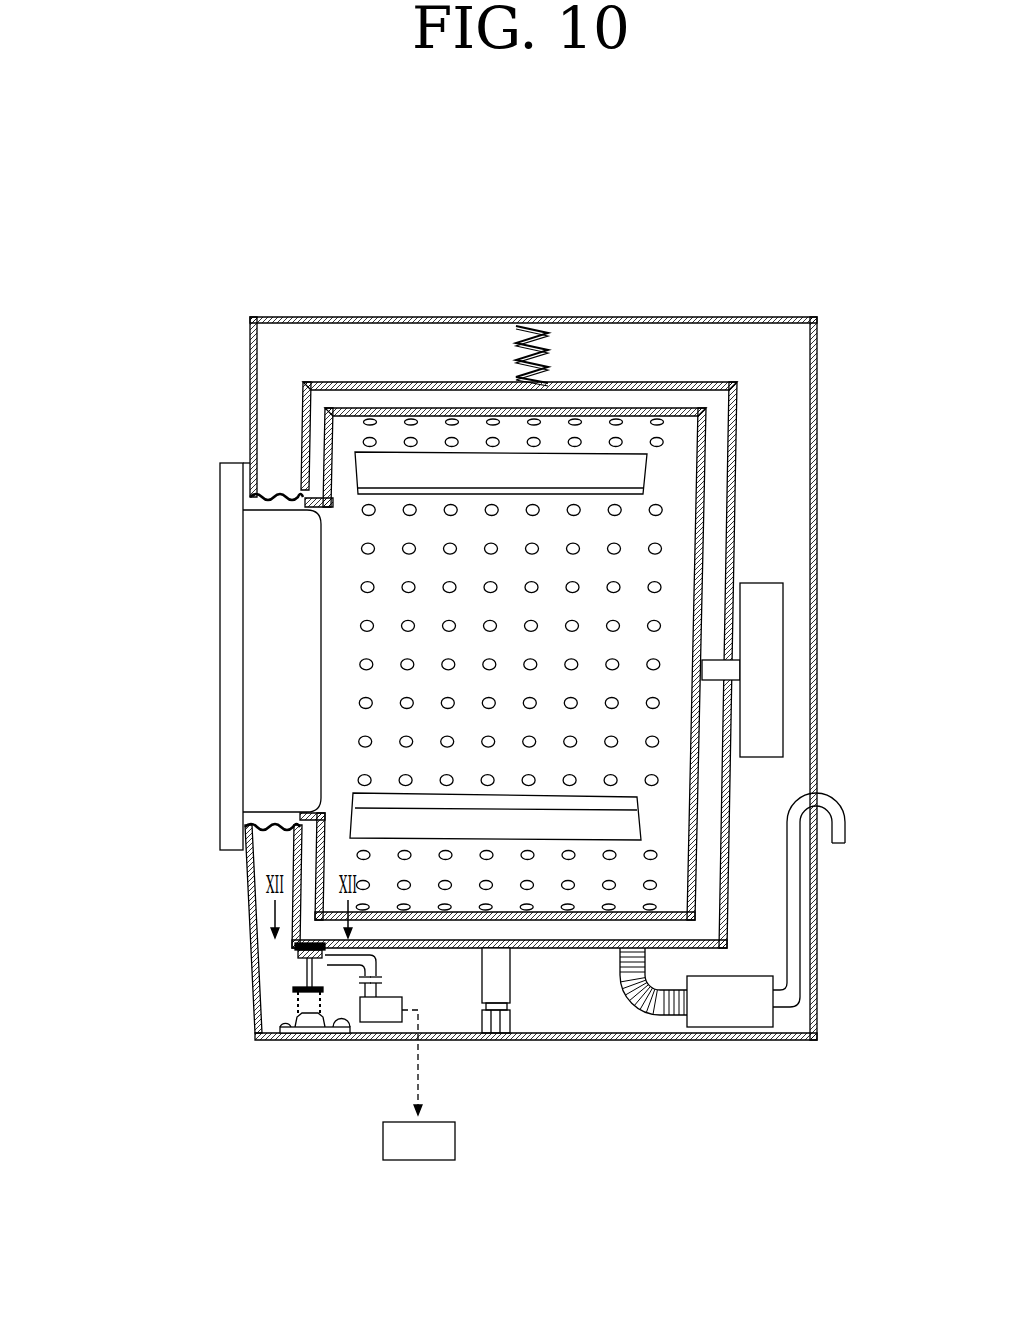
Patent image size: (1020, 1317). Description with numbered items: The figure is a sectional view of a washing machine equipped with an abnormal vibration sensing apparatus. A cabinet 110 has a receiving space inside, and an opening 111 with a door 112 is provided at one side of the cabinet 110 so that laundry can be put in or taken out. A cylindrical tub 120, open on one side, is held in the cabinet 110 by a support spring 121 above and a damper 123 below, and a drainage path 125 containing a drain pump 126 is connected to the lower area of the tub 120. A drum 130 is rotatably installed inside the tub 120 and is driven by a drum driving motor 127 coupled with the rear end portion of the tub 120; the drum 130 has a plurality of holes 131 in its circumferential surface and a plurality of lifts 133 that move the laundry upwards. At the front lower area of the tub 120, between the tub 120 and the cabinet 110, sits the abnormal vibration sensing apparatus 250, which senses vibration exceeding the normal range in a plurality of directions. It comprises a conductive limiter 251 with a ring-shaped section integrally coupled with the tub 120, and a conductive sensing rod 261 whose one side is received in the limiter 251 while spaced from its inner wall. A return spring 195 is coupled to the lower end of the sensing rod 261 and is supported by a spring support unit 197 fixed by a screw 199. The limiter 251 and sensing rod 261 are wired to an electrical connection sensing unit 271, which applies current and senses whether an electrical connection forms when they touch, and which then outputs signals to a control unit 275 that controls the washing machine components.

The cabinet 110 is at (817, 390).
The opening 111 is at (250, 497).
The door 112 is at (228, 612).
The tub 120 is at (548, 948).
The support spring 121 is at (548, 355).
The damper 123 is at (487, 973).
The drainage path 125 is at (652, 1015).
The drain pump 126 is at (730, 1005).
The drum driving motor 127 is at (763, 598).
The drum 130 is at (105, 725).
The holes 131 is at (364, 739).
The lifts 133 is at (375, 818).
The return spring 195 is at (297, 1005).
The spring support unit 197 is at (305, 1040).
The screw 199 is at (350, 1040).
The abnormal vibration sensing apparatus 250 is at (160, 923).
The limiter 251 is at (295, 946).
The sensing rod 261 is at (305, 975).
The electrical connection sensing unit 271 is at (382, 1022).
The control unit 275 is at (420, 1165).